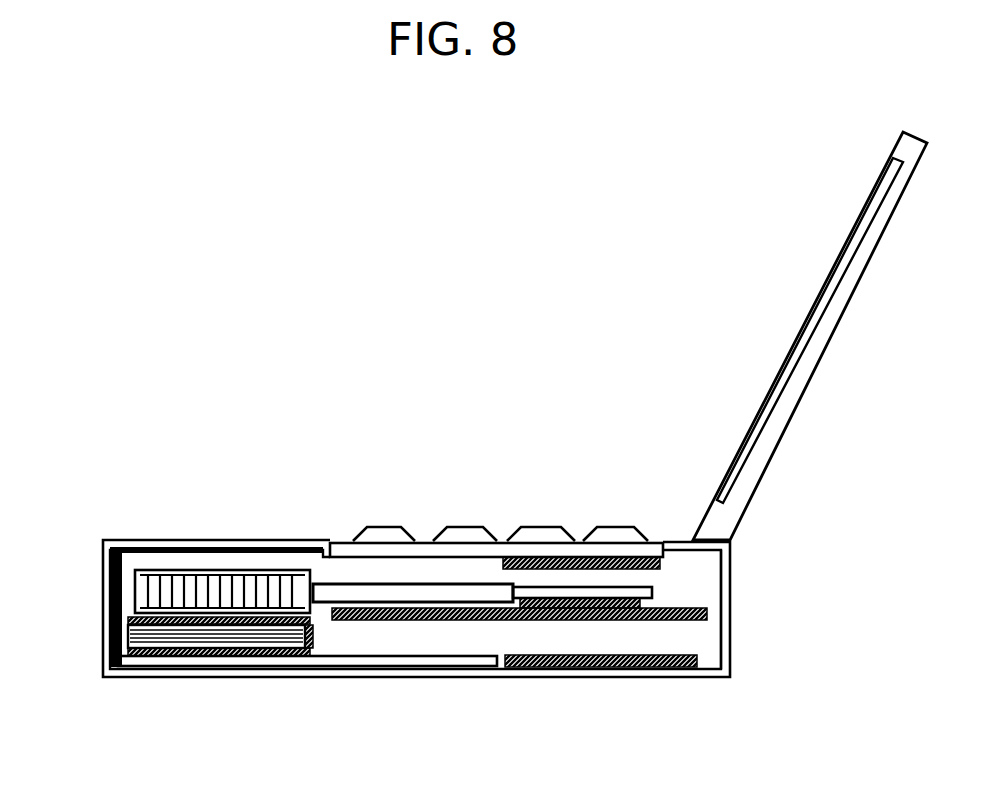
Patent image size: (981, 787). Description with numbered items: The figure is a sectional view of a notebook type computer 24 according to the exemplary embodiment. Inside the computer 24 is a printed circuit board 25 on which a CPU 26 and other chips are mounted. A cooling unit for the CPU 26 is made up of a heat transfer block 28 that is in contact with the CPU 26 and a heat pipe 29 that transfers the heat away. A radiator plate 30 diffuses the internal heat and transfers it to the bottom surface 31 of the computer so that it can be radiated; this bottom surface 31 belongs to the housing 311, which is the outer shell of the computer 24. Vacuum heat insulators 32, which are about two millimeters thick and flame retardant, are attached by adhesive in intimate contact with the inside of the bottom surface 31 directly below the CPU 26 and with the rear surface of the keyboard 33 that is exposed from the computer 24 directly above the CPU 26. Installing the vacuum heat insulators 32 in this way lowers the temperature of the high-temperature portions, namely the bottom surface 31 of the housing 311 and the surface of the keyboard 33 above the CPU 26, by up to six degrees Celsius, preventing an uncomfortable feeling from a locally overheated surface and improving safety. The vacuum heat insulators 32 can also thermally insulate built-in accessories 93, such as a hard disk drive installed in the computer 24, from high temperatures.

The notebook type computer 24 is at (147, 527).
The printed circuit board 25 is at (688, 623).
The CPU 26 is at (653, 602).
The heat transfer block 28 is at (557, 590).
The heat pipe 29 is at (362, 585).
The radiator plate 30 is at (250, 665).
The bottom surface 31 is at (455, 677).
The housing 311 is at (728, 677).
The vacuum heat insulator 32 is at (594, 562).
The keyboard 33 is at (430, 540).
The built-in accessories 93 is at (125, 642).